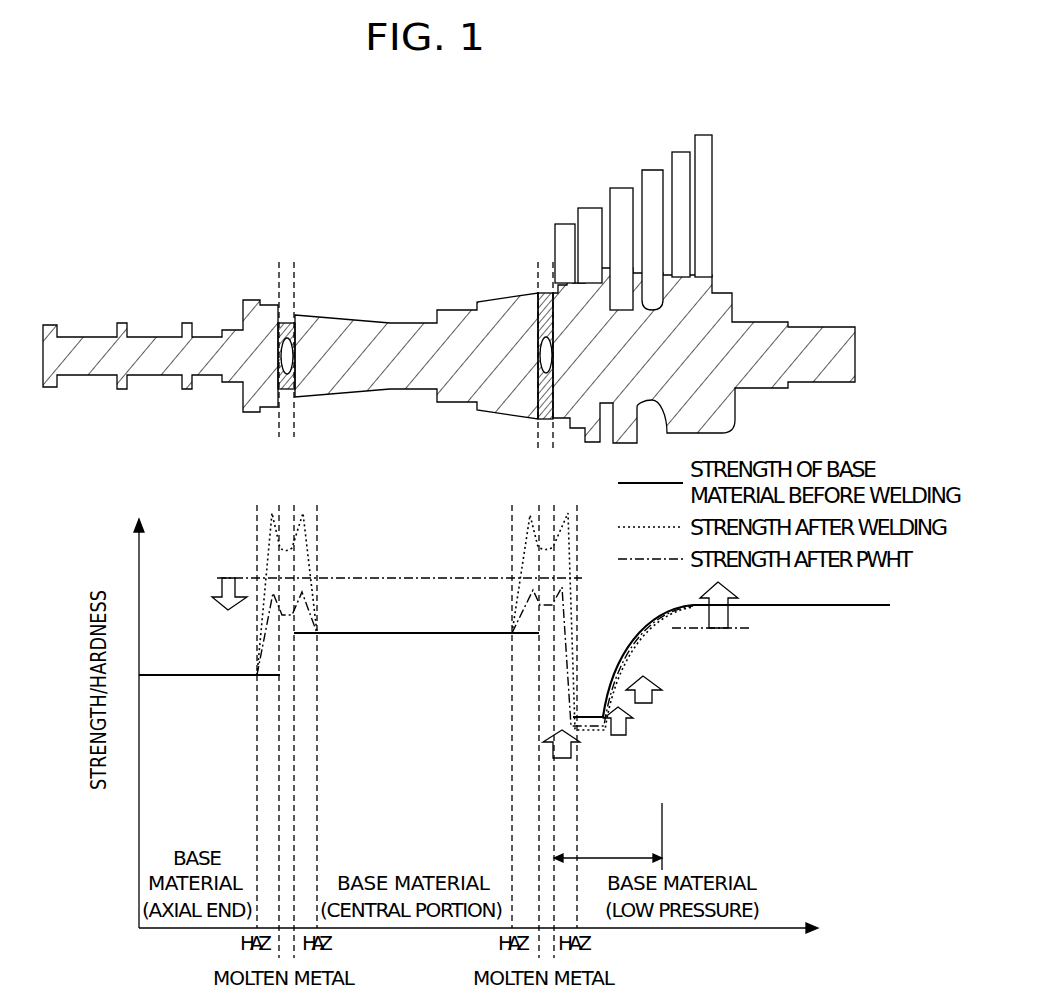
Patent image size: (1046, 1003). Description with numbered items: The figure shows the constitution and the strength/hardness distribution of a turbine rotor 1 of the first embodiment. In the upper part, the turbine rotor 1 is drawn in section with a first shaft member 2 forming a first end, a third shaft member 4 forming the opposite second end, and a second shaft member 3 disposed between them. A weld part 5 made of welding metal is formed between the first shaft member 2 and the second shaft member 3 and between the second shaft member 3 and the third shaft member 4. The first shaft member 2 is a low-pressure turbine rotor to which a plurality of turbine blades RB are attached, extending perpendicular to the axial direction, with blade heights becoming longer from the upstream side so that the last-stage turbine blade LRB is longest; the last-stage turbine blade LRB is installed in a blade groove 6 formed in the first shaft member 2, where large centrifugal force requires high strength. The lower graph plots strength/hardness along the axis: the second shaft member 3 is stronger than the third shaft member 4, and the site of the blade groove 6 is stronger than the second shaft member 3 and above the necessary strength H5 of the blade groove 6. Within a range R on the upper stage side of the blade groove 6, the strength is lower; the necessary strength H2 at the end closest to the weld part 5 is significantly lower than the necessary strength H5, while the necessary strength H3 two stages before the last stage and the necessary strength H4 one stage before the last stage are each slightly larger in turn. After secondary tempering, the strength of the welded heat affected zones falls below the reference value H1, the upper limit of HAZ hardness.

The turbine rotor 1 is at (678, 114).
The first shaft member 2 is at (830, 338).
The second shaft member 3 is at (383, 332).
The third shaft member 4 is at (73, 343).
The weld part 5 is at (287, 323).
The blade groove 6 is at (662, 193).
The turbine blades RB is at (682, 152).
The last-stage turbine blade LRB is at (705, 137).
The reference value H1 is at (410, 577).
The necessary strength at the end closest to the weld part H2 is at (550, 758).
The necessary strength at the stage two stages before the last stage H3 is at (597, 733).
The necessary strength at the stage one stage before the last stage H4 is at (630, 707).
The necessary strength of the blade groove H5 is at (703, 630).
The range R is at (608, 836).